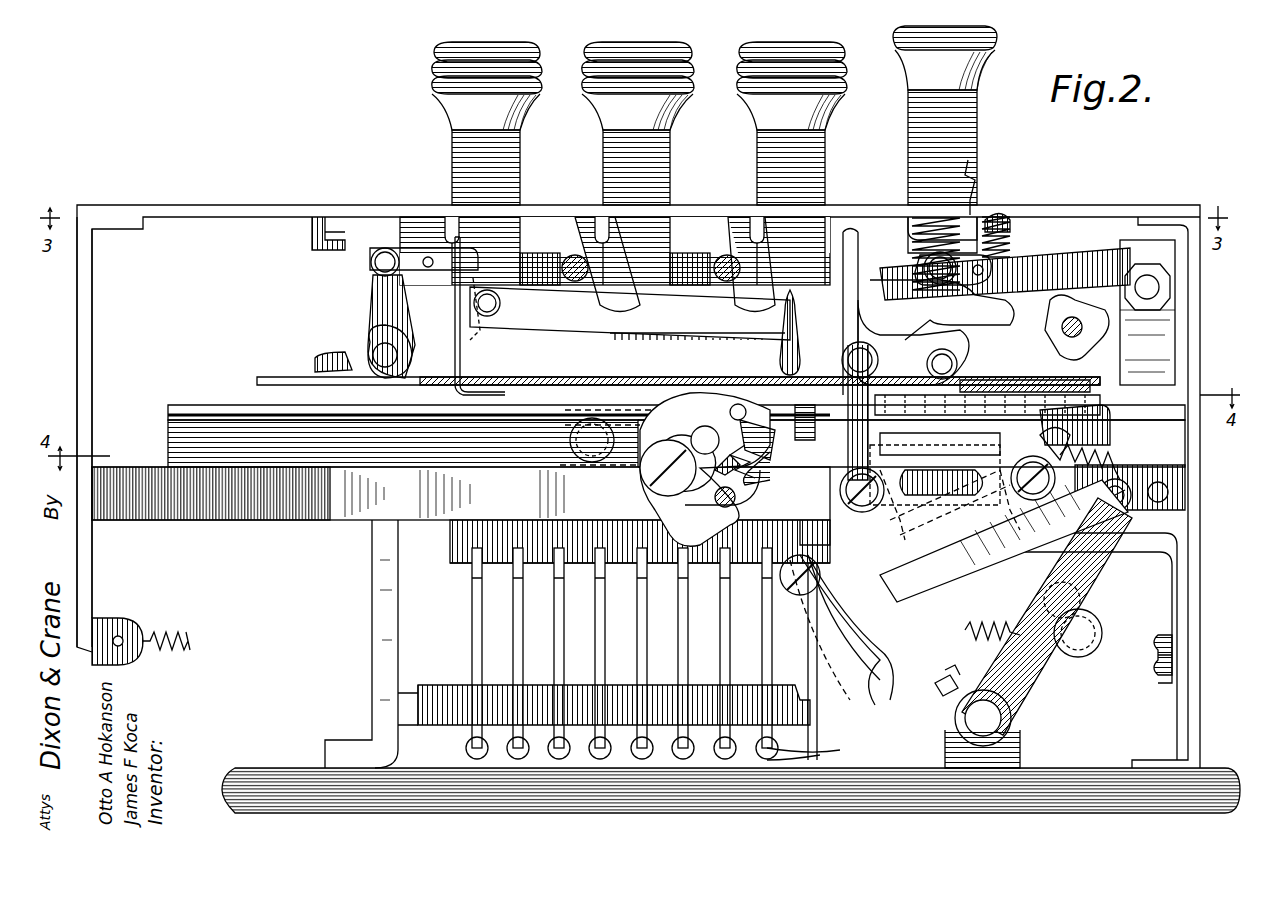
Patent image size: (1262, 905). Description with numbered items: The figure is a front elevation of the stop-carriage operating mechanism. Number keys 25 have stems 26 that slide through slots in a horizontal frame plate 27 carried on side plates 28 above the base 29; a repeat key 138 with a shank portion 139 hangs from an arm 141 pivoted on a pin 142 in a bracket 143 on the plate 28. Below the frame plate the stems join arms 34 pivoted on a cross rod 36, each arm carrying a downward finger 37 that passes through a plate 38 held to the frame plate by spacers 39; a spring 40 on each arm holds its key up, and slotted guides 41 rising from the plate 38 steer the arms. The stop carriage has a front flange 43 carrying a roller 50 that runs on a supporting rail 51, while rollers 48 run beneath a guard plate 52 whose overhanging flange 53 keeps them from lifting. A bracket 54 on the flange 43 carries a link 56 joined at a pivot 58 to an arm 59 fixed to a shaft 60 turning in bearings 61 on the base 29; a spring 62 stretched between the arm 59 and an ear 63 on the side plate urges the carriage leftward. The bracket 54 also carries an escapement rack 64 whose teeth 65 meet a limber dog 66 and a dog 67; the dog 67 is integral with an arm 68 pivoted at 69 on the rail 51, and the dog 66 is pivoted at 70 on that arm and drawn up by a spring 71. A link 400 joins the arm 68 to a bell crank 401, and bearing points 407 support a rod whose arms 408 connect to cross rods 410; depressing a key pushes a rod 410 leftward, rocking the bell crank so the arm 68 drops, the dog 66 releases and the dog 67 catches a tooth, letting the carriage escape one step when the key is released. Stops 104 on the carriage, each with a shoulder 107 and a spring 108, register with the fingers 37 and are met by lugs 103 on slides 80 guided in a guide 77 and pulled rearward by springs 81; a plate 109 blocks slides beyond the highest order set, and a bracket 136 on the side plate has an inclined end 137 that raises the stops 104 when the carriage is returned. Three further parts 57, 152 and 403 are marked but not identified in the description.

The number keys 25 is at (432, 78).
The key stems 26 is at (672, 188).
The horizontal frame plate 27 is at (1110, 212).
The side plates 28 is at (77, 370).
The base 29 is at (1108, 768).
The arms 34 is at (573, 325).
The cross rod 36 is at (1092, 330).
The finger 37 is at (790, 365).
The plate 38 is at (626, 370).
The spacers 39 is at (318, 235).
The spring 40 is at (990, 215).
The slotted guides 41 is at (461, 352).
The front flange 43 is at (1120, 438).
The rollers 48 is at (565, 438).
The roller 50 is at (848, 420).
The supporting rail 51 is at (461, 493).
The guard plate 52 is at (170, 437).
The overhanging flange 53 is at (172, 406).
The bracket 54 is at (830, 622).
The link 56 is at (930, 552).
The link 57 is at (835, 640).
The pivotal connection 58 is at (1130, 500).
The arm 59 is at (1040, 680).
The shaft 60 is at (1000, 722).
The bearings 61 is at (1020, 748).
The spring 62 is at (188, 632).
The ear 63 is at (118, 618).
The escapement rack 64 is at (935, 474).
The teeth 65 is at (940, 448).
The limber dog 66 is at (778, 458).
The dog 67 is at (808, 405).
The arm 68 is at (905, 560).
The pivot 69 is at (1010, 480).
The pivot 70 is at (640, 470).
The spring 71 is at (700, 407).
The guide 77 is at (452, 722).
The slides 80 is at (472, 633).
The spring 81 is at (840, 750).
The lug 103 is at (480, 572).
The stops 104 is at (1100, 412).
The shoulder 107 is at (1015, 548).
The springs 108 is at (876, 489).
The plate 109 is at (460, 548).
The bracket 136 is at (1175, 597).
The inclined end 137 is at (862, 600).
The repeat key 138 is at (996, 64).
The shank portion 139 is at (962, 140).
The arm 141 is at (1070, 262).
The pin 142 is at (1160, 290).
The bracket 143 is at (1177, 355).
The lug 152 is at (968, 164).
The link 400 is at (870, 385).
The bell crank 401 is at (965, 312).
The plate 403 is at (1010, 380).
The bearing points 407 is at (378, 345).
The arms 408 is at (372, 300).
The cross rods 410 is at (440, 295).